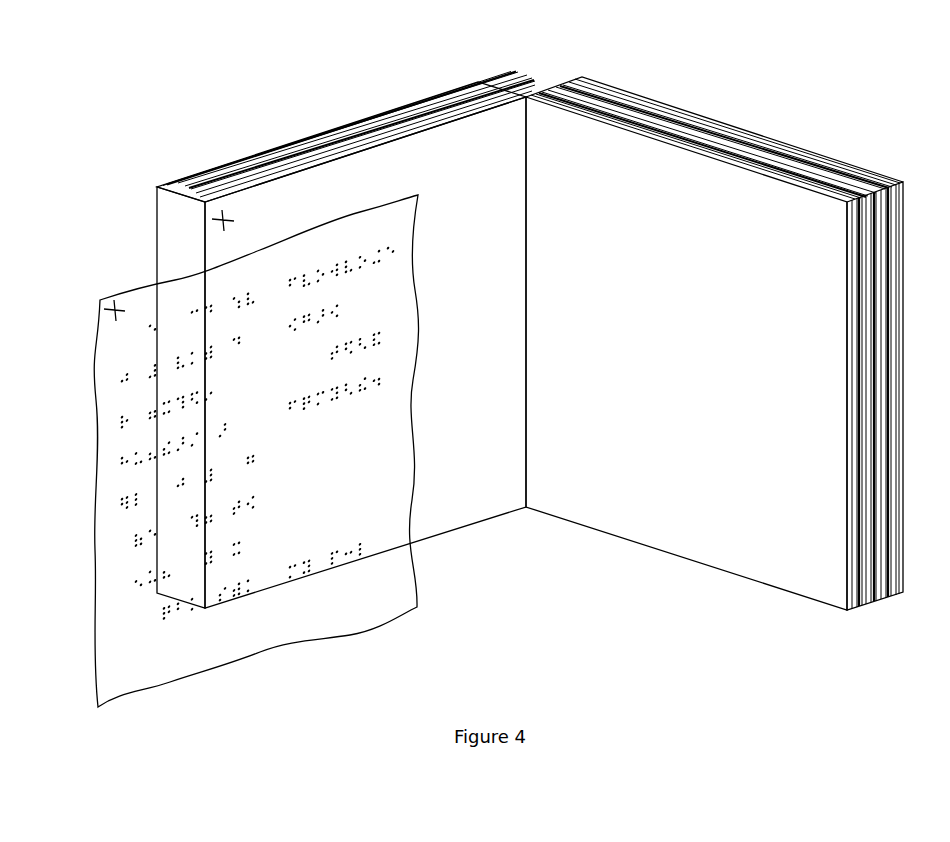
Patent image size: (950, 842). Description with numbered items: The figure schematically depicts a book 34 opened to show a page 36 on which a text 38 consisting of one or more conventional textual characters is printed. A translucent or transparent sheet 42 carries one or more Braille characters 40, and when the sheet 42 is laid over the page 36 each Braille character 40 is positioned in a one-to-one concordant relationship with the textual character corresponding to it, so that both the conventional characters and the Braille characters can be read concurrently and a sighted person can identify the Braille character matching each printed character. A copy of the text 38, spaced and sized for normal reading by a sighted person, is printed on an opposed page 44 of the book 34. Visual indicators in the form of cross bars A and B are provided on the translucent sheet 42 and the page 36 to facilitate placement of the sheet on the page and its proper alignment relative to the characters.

The book 34 is at (530, 338).
The page 36 is at (275, 190).
The text 38 is at (472, 167).
The Braille characters 40 is at (126, 340).
The translucent sheet 42 is at (220, 424).
The opposed page 44 is at (792, 574).
The cross bar A is at (213, 217).
The cross bar B is at (100, 305).